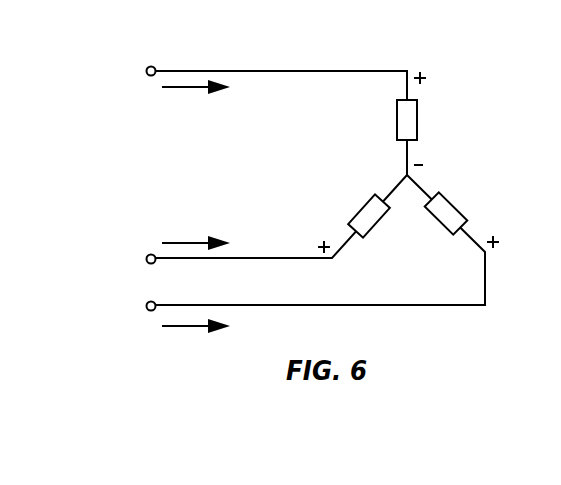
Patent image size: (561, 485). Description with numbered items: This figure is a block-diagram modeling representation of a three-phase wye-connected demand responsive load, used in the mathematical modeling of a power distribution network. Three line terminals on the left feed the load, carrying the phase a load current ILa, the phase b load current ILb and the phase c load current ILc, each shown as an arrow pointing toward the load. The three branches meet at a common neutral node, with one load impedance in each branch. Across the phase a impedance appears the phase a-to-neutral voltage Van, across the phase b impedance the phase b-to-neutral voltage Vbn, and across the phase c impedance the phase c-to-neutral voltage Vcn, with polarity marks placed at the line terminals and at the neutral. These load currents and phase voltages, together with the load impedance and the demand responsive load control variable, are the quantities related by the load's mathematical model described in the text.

The phase a-to-neutral voltage Van is at (428, 119).
The phase b-to-neutral voltage Vbn is at (353, 200).
The phase c-to-neutral voltage Vcn is at (456, 197).
The phase a load current ILa is at (182, 95).
The phase b load current ILb is at (182, 226).
The phase c load current ILc is at (182, 331).